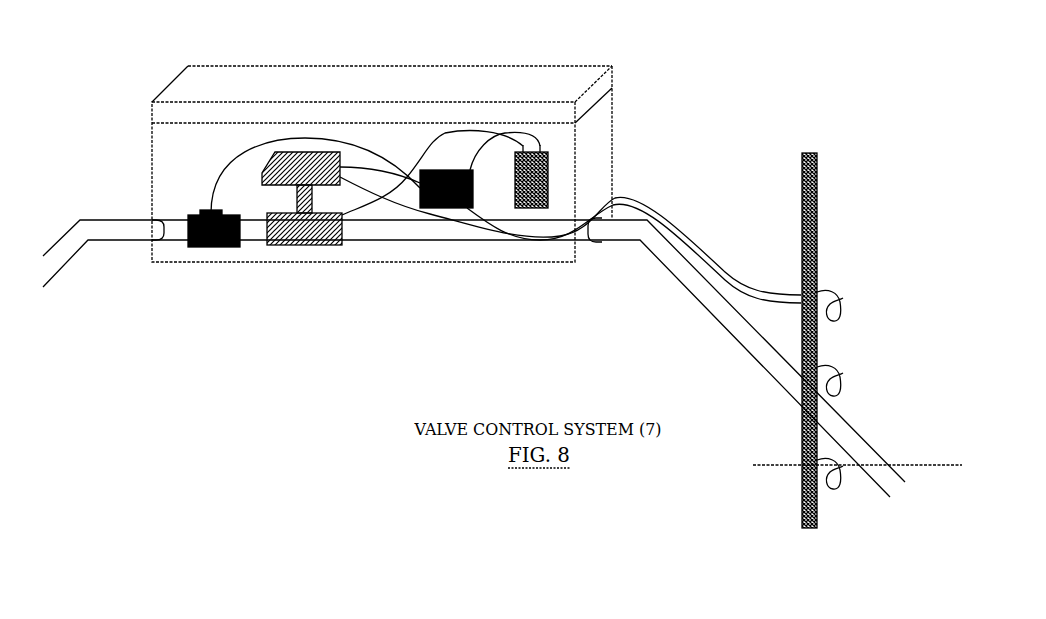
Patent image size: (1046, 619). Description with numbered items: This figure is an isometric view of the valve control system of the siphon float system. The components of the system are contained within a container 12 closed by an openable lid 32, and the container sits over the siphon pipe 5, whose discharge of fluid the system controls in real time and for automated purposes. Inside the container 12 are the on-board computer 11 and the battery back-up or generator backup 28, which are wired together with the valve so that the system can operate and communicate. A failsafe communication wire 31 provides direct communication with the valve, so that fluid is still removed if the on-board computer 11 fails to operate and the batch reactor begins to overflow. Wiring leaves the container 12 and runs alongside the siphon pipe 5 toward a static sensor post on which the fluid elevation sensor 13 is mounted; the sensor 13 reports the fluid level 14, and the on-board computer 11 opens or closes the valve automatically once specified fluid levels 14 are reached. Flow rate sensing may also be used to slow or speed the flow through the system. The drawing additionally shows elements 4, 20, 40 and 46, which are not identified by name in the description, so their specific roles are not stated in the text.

The wires 4 is at (404, 157).
The siphon pipe 5 is at (107, 238).
The on-board computer 11 is at (476, 183).
The container 12 is at (614, 130).
The fluid elevation sensor 13 is at (831, 290).
The fluid level 14 is at (934, 462).
The wall 20 is at (818, 207).
The battery back-up or generator backup 28 is at (546, 151).
The failsafe communication wire 31 is at (378, 198).
The openable lid 32 is at (614, 78).
The valve 40 is at (310, 248).
The sensor 46 is at (217, 249).